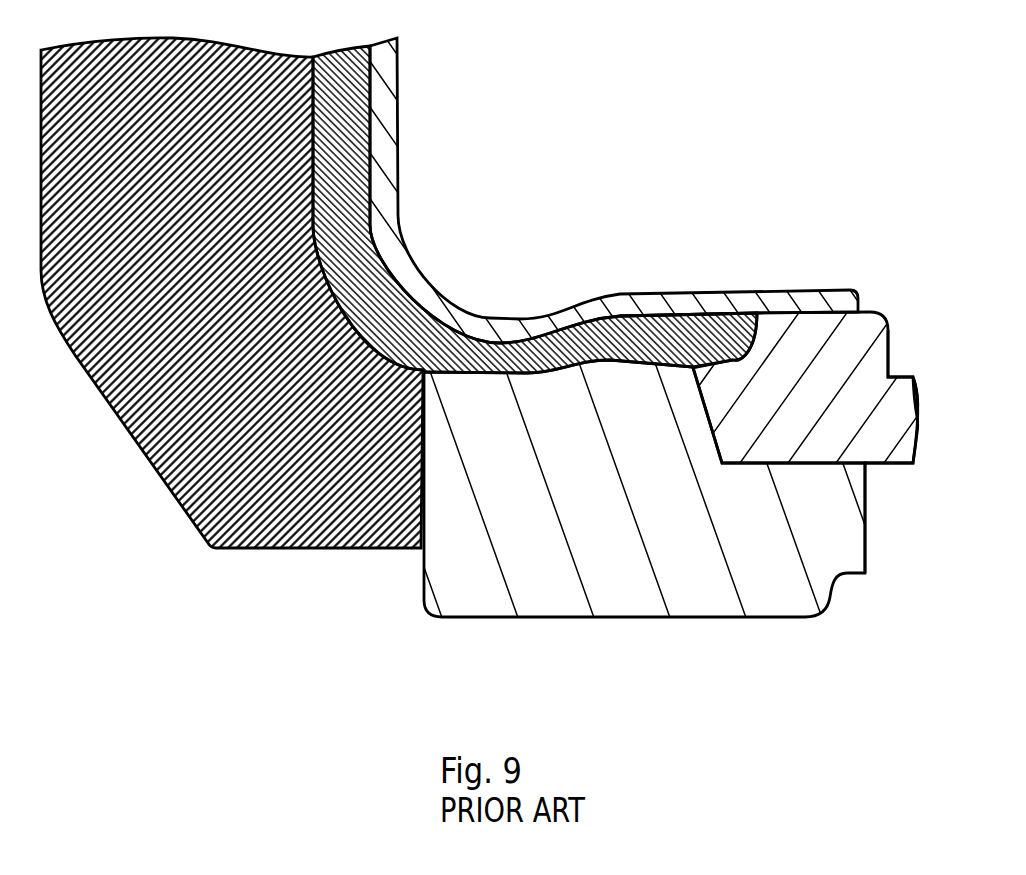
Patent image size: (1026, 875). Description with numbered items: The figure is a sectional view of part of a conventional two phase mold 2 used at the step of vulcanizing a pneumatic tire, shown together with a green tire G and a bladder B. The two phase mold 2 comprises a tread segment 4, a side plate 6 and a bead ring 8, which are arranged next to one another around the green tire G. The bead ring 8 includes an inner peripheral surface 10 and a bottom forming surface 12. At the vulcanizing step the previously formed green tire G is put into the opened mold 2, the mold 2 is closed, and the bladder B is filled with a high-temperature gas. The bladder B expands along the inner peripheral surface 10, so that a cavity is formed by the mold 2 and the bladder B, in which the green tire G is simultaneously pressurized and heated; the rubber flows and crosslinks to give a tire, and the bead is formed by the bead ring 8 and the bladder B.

The two phase mold 2 is at (515, 351).
The tread segment 4 is at (255, 523).
The side plate 6 is at (690, 600).
The bead ring 8 is at (877, 447).
The inner peripheral surface 10 is at (813, 312).
The bottom forming surface 12 is at (695, 315).
The green tire G is at (352, 102).
The bladder B is at (380, 173).